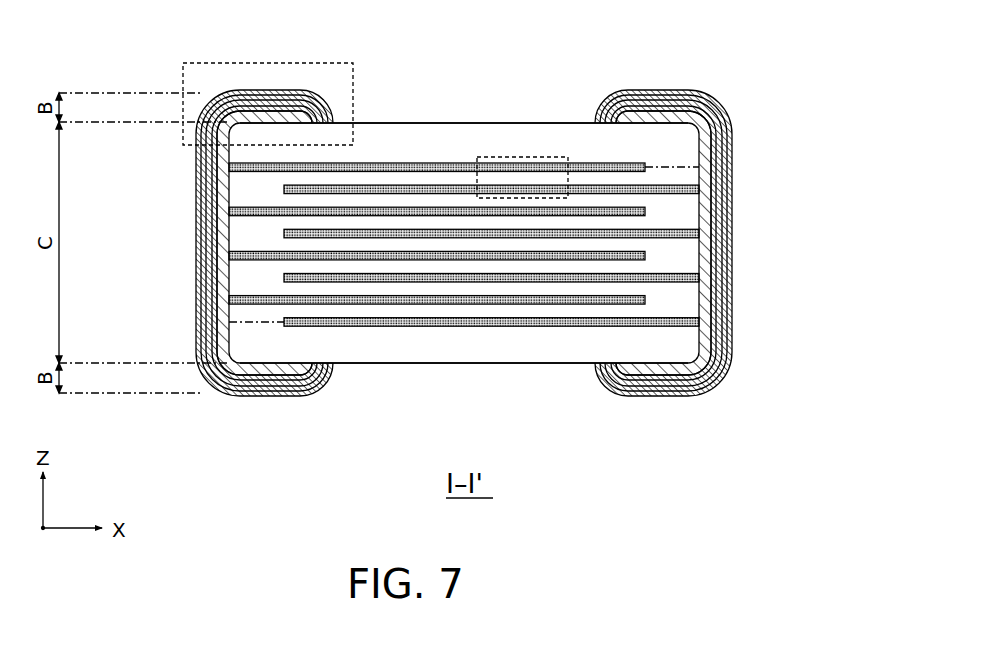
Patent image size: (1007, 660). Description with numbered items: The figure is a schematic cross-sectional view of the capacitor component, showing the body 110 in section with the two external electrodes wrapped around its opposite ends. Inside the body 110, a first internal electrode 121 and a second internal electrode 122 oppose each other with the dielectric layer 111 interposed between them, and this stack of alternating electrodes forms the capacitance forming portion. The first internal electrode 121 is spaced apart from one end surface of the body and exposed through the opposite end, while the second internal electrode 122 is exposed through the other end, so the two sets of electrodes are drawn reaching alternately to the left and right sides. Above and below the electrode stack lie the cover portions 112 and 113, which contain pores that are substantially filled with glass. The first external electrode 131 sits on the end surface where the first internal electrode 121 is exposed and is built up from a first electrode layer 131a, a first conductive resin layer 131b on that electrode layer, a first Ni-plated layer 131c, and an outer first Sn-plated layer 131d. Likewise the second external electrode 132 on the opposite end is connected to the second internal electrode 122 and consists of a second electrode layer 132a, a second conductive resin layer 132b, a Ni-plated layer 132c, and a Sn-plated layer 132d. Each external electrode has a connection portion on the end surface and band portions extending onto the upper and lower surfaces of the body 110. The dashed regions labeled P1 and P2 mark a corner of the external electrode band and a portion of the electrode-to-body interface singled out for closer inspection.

The body 110 is at (413, 123).
The dielectric layer 111 is at (362, 190).
The cover portion 112 is at (450, 140).
The cover portion 113 is at (467, 352).
The first internal electrode 121 is at (527, 186).
The second internal electrode 122 is at (561, 166).
The first external electrode 131 is at (204, 243).
The first electrode layer 131a is at (222, 242).
The first conductive resin layer 131b is at (214, 270).
The first Ni-plated layer 131c is at (208, 298).
The first Sn-plated layer 131d is at (200, 326).
The second external electrode 132 is at (731, 243).
The second electrode layer 132a is at (706, 235).
The second conductive resin layer 132b is at (712, 262).
The Ni-plated layer 132c is at (718, 290).
The Sn-plated layer 132d is at (726, 318).
The corner region P1 is at (262, 63).
The region P2 is at (487, 157).